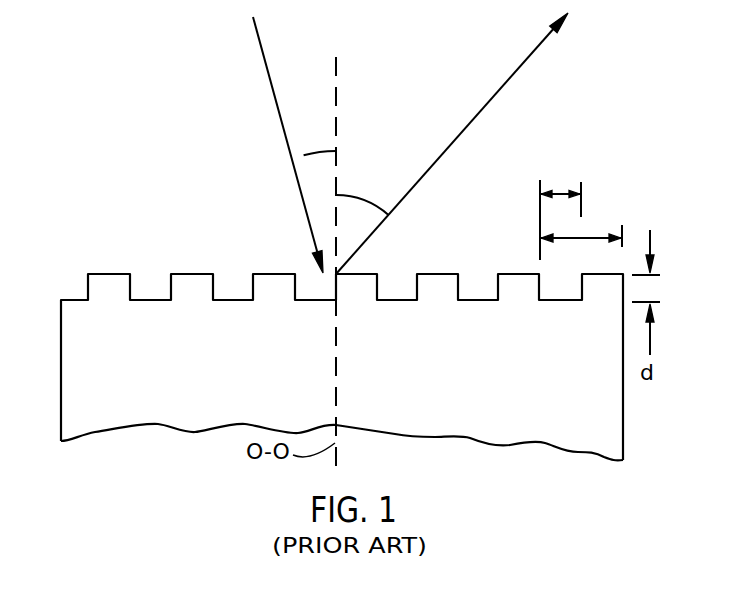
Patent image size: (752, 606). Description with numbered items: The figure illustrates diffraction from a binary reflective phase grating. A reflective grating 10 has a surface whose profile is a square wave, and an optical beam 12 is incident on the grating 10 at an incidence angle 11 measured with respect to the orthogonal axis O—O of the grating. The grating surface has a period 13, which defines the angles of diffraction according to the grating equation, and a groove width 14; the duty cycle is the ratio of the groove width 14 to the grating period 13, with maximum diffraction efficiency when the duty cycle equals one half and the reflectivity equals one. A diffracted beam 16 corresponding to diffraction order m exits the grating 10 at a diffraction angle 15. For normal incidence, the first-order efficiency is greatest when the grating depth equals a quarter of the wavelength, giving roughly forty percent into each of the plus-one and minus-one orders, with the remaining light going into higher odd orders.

The reflective grating 10 is at (78, 308).
The angle θ0 11 is at (304, 100).
The optical beam 12 is at (274, 95).
The grating period Λ 13 is at (610, 221).
The groove width L1 14 is at (578, 175).
The angle θm 15 is at (377, 158).
The diffracted beam 16 is at (473, 122).